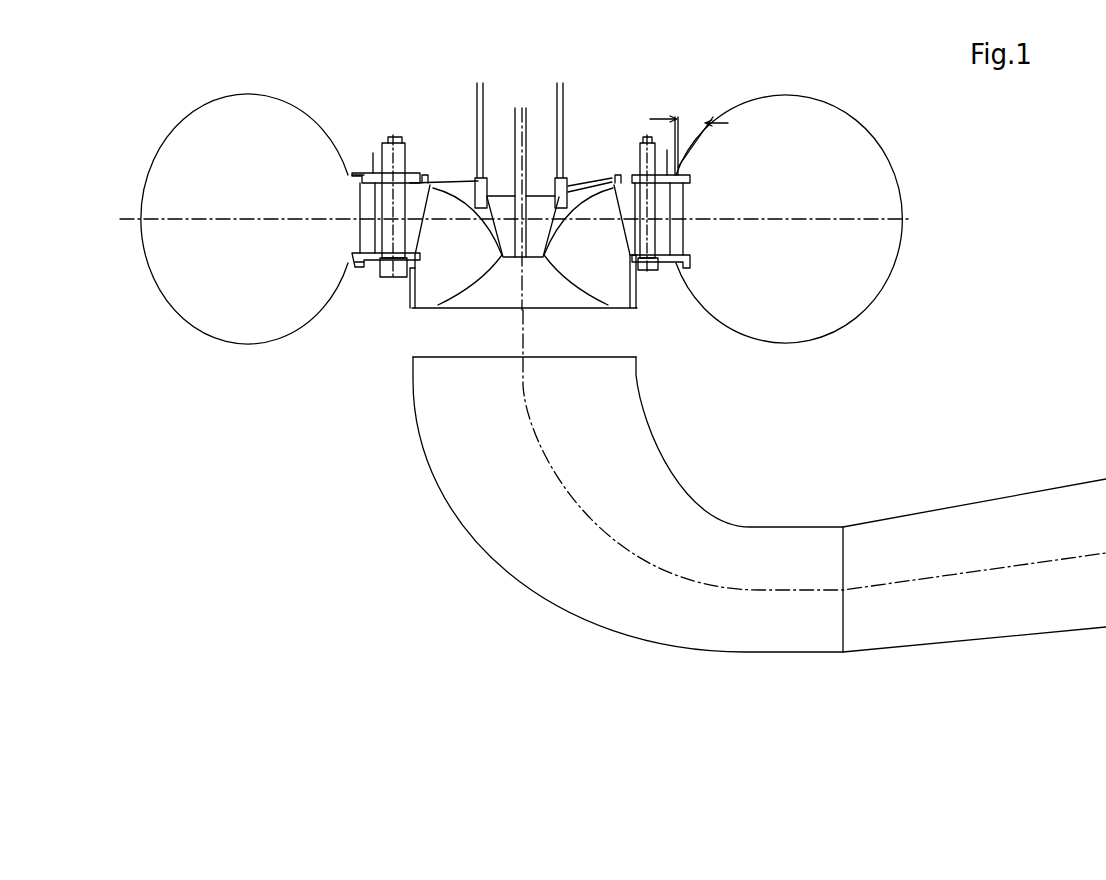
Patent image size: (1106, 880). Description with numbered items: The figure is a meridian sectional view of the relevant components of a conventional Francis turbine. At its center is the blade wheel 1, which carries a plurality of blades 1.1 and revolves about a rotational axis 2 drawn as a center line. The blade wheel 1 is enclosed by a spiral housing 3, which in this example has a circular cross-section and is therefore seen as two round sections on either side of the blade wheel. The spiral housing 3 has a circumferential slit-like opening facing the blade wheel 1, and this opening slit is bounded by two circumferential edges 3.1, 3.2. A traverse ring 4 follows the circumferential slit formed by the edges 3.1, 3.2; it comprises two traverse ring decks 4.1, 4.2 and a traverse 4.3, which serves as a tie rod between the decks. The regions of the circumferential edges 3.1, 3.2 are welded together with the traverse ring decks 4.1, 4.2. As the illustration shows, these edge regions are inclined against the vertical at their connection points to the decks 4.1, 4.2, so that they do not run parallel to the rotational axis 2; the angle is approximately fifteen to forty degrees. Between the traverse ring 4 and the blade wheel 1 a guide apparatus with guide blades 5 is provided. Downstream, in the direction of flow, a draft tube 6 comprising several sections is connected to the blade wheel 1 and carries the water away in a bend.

The blade wheel 1 is at (442, 165).
The blades 1.1 is at (611, 262).
The rotational axis 2 is at (527, 140).
The spiral housing 3 is at (717, 107).
The circumferential edge 3.1 is at (365, 170).
The circumferential edge 3.2 is at (370, 270).
The traverse ring 4 is at (342, 241).
The traverse ring deck 4.1 is at (350, 176).
The traverse ring deck 4.2 is at (348, 262).
The traverse 4.3 is at (365, 197).
The guide blades 5 is at (668, 241).
The draft tube 6 is at (731, 470).